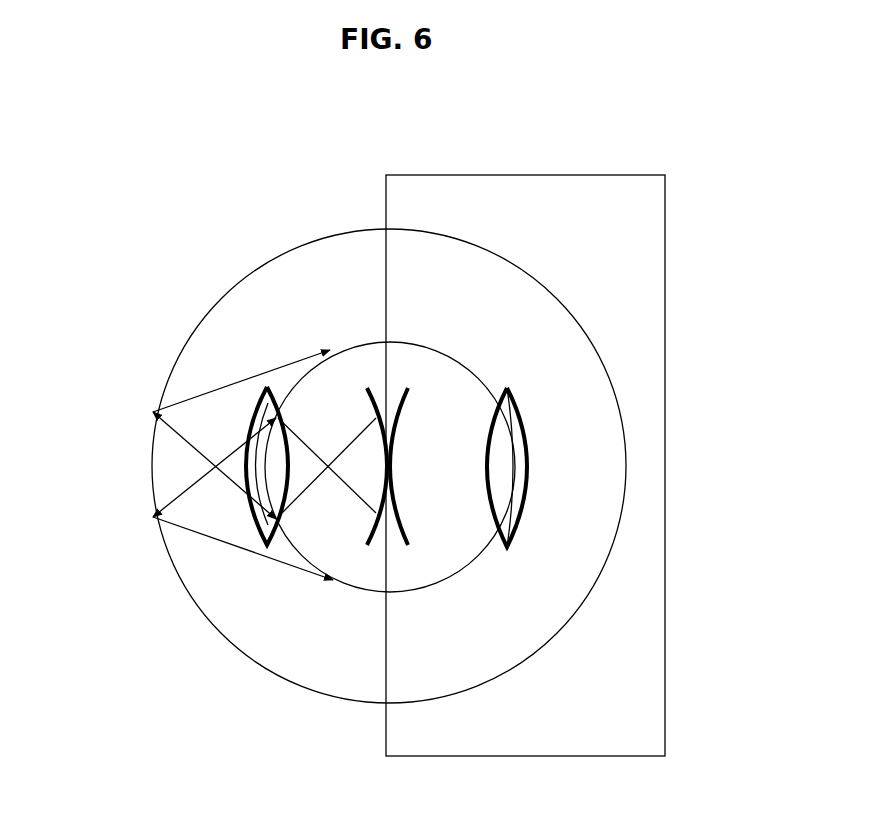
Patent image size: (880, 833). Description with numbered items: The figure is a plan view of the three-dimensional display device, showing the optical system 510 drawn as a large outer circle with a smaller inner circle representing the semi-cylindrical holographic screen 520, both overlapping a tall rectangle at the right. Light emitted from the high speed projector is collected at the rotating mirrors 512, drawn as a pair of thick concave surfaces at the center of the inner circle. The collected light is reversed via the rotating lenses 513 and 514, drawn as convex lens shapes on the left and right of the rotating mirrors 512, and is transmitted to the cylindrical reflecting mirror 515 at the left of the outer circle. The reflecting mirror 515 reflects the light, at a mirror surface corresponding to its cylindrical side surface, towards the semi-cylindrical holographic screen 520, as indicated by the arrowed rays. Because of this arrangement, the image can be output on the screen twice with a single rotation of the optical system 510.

The optical system 510 is at (535, 277).
The semi-cylindrical holographic screen 520 is at (483, 380).
The rotating mirrors 512 is at (393, 447).
The rotating lens 513 is at (257, 405).
The rotating lens 514 is at (522, 508).
The cylindrical reflecting mirror 515 is at (155, 392).